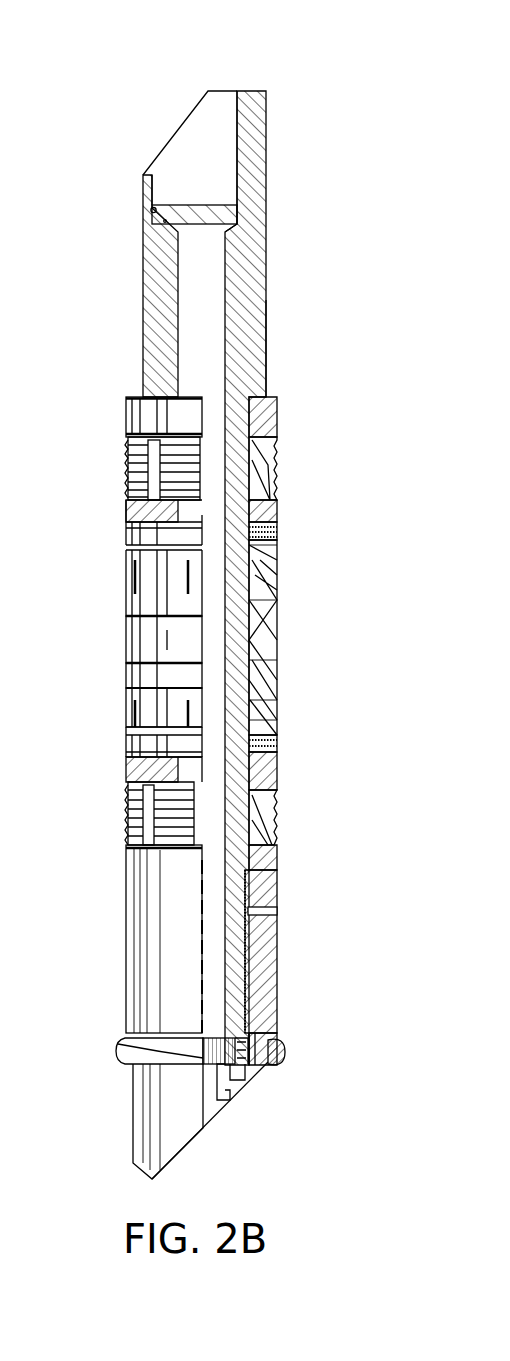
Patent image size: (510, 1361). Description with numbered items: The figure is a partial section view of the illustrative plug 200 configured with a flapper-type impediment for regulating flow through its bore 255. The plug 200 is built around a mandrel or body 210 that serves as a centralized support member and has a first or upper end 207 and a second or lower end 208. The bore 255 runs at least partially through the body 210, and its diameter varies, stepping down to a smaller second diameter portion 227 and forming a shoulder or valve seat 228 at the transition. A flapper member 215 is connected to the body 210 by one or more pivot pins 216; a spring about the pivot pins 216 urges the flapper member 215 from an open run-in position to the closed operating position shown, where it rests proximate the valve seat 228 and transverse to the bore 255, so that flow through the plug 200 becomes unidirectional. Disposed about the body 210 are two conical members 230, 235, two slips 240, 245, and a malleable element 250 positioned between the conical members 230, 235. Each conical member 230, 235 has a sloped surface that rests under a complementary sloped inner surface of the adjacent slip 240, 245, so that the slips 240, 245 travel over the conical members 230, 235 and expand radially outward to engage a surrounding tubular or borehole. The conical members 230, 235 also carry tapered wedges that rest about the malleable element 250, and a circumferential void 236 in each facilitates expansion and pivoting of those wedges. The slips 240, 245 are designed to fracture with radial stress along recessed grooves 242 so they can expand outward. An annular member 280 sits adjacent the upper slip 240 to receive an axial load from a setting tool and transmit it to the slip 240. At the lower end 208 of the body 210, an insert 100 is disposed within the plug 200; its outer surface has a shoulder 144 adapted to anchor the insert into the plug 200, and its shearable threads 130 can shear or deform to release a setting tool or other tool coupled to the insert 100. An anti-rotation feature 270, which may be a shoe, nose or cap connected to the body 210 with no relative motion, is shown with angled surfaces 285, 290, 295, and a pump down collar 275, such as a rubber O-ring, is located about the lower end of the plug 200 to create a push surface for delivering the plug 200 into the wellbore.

The plug 200 is at (88, 78).
The bore 255 is at (216, 112).
The first or upper end 207 is at (253, 91).
The angled surface 295 is at (165, 145).
The pivot pin 216 is at (150, 210).
The flapper member 215 is at (225, 211).
The shoulder or valve seat 228 is at (240, 230).
The second diameter portion 227 is at (225, 305).
The body 210 is at (267, 332).
The annular member 280 is at (126, 412).
The slip 240 is at (128, 465).
The conical member 230 is at (272, 507).
The circumferential void 236 is at (127, 552).
The malleable element 250 is at (280, 640).
The conical member 235 is at (267, 760).
The slip 245 is at (128, 790).
The recessed groove 242 is at (150, 822).
The anti-rotation feature 270 is at (278, 958).
The shearable threads 130 is at (116, 1046).
The pump down collar 275 is at (287, 1052).
The second or lower end 208 is at (255, 1067).
The shoulder 144 is at (240, 1095).
The insert 100 is at (225, 1110).
The angled surface 290 is at (140, 1170).
The angled surface 285 is at (185, 1160).